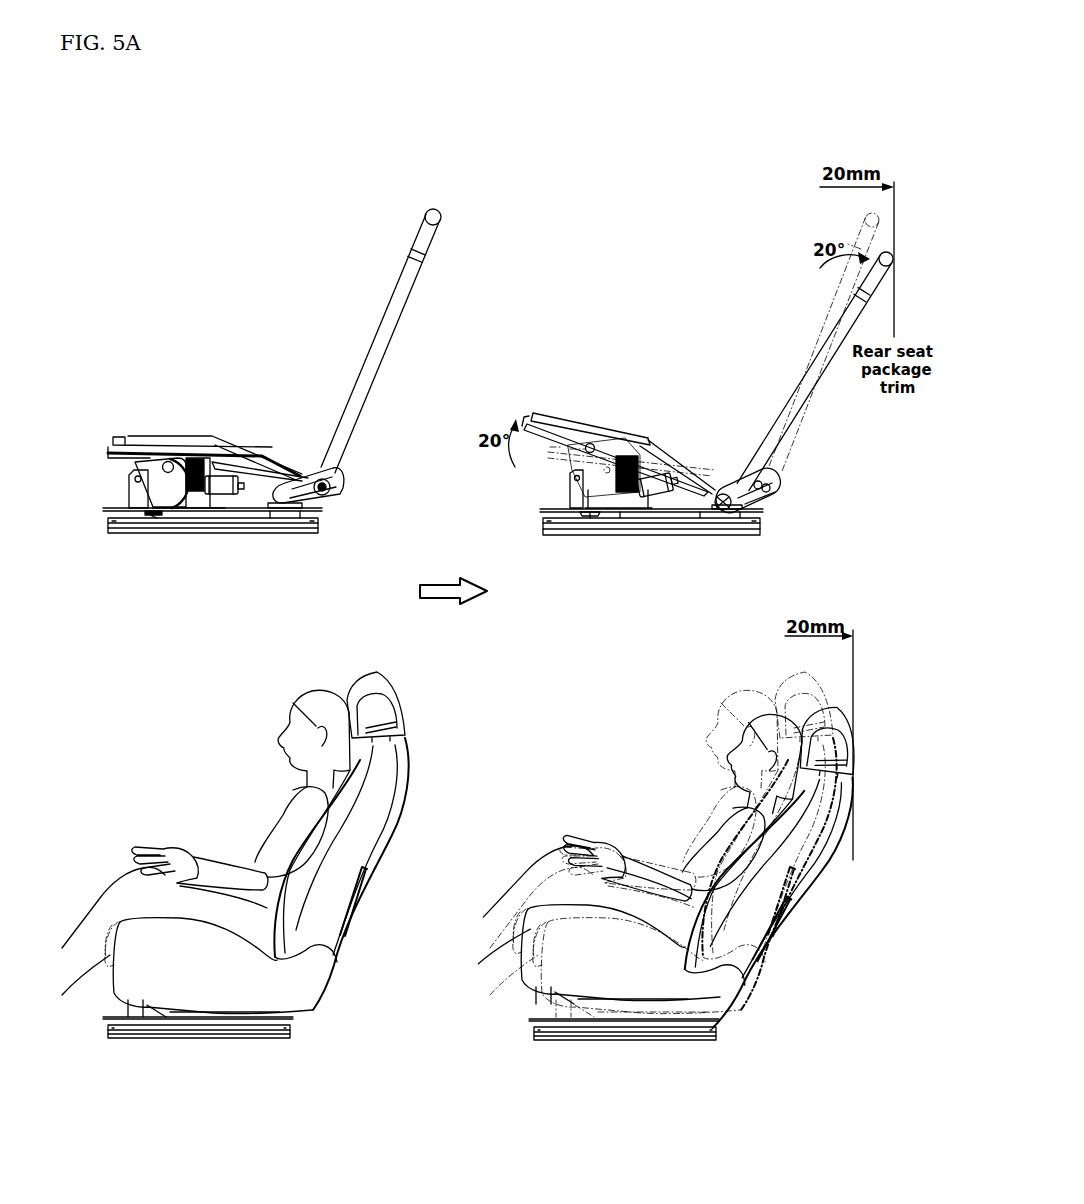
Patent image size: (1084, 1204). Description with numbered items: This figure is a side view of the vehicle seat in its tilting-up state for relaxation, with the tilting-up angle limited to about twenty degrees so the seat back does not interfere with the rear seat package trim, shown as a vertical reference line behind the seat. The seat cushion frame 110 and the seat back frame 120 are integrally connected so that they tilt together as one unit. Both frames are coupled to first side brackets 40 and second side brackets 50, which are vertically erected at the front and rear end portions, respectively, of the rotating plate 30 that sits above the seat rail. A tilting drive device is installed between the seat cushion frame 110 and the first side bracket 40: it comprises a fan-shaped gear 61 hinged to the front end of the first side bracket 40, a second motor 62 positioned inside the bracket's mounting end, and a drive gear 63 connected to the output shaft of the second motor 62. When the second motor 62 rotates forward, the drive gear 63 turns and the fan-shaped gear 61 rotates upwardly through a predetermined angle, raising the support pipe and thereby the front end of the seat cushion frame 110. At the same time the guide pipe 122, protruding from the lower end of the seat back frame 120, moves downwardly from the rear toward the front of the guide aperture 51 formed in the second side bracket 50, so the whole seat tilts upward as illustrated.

The rotating plate 30 is at (690, 515).
The first side bracket 40 is at (562, 495).
The second side bracket 50 is at (566, 504).
The guide aperture 51 is at (768, 501).
The fan-shaped gear 61 is at (597, 452).
The second motor 62 is at (665, 477).
The drive gear 63 is at (645, 460).
The seat cushion frame 110 is at (168, 432).
The seat back frame 120 is at (348, 384).
The guide pipe 122 is at (721, 511).